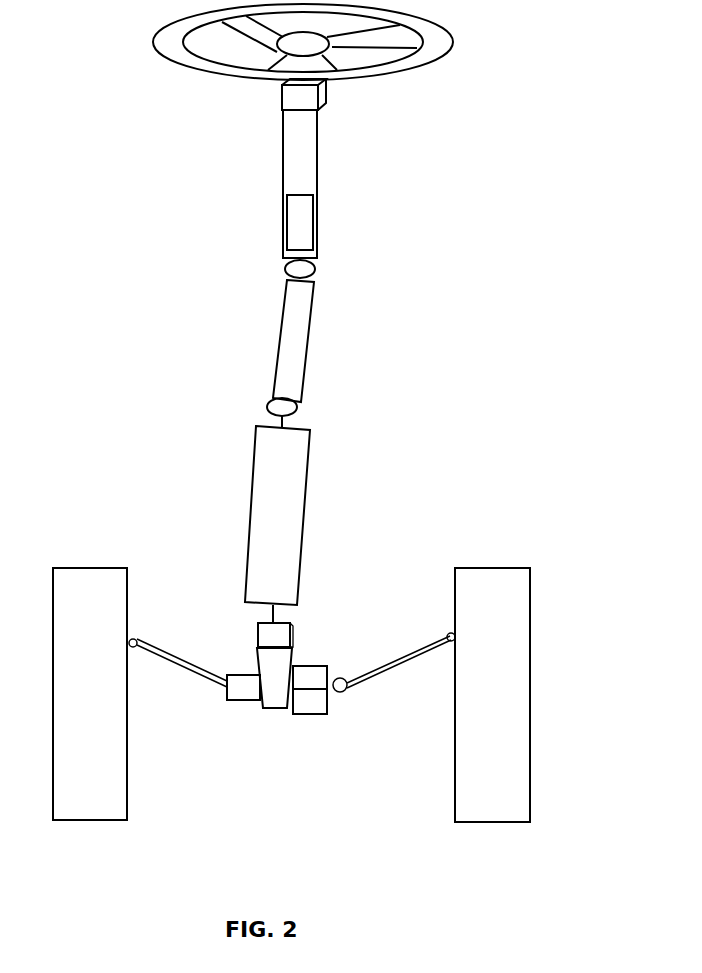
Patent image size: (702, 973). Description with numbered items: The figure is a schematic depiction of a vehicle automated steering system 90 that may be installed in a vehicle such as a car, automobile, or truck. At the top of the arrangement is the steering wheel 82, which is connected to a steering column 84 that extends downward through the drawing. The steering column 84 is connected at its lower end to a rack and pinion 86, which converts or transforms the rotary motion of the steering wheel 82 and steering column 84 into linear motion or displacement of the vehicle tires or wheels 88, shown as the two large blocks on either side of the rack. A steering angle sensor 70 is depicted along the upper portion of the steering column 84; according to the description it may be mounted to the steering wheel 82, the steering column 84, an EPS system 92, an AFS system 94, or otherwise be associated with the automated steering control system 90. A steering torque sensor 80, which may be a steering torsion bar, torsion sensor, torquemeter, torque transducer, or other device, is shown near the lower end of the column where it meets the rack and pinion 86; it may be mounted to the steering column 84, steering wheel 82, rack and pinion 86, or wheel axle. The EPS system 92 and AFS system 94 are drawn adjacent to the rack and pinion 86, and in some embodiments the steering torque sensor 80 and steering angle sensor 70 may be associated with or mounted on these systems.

The steering angle sensor 70 is at (290, 227).
The steering torque sensor 80 is at (257, 628).
The steering wheel 82 is at (436, 58).
The steering column 84 is at (305, 355).
The rack and pinion 86 is at (258, 707).
The vehicle tires or wheels 88 is at (531, 680).
The vehicle automated steering system 90 is at (459, 232).
The EPS system 92 is at (308, 717).
The AFS system 94 is at (322, 668).